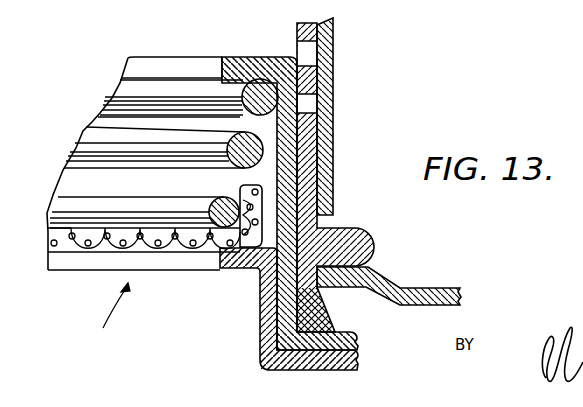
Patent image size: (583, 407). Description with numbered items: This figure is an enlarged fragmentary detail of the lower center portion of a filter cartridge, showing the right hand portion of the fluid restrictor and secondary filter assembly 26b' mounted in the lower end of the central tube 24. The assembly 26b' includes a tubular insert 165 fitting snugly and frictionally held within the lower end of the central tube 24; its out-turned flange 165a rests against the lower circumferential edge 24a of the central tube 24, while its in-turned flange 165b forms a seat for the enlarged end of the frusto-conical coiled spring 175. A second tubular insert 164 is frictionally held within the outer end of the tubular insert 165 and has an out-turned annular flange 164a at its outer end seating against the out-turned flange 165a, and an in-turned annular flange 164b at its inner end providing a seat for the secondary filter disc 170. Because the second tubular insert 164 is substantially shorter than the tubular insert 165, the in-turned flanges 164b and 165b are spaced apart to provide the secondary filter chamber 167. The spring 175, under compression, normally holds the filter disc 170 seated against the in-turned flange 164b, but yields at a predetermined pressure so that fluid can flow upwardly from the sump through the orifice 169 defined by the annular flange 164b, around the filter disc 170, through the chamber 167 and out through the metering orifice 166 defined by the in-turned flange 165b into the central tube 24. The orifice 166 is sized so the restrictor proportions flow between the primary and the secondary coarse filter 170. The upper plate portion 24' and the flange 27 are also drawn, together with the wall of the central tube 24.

The central tube 24 is at (337, 177).
The upper plate portion 24' is at (350, 116).
The lower circumferential edge 24a is at (330, 322).
The flange 27 is at (422, 287).
The tubular insert 165 is at (320, 212).
The out-turned flange 165a is at (357, 343).
The in-turned flange 165b is at (272, 57).
The second tubular insert 164 is at (261, 337).
The out-turned annular flange 164a is at (317, 372).
The in-turned annular flange 164b is at (245, 268).
The frusto-conical coiled spring 175 is at (263, 99).
The metering orifice 166 is at (175, 57).
The secondary filter chamber 167 is at (122, 191).
The orifice 169 is at (184, 262).
The secondary filter disc 170 is at (100, 253).
The fluid restrictor and secondary filter assembly 26b' is at (91, 313).